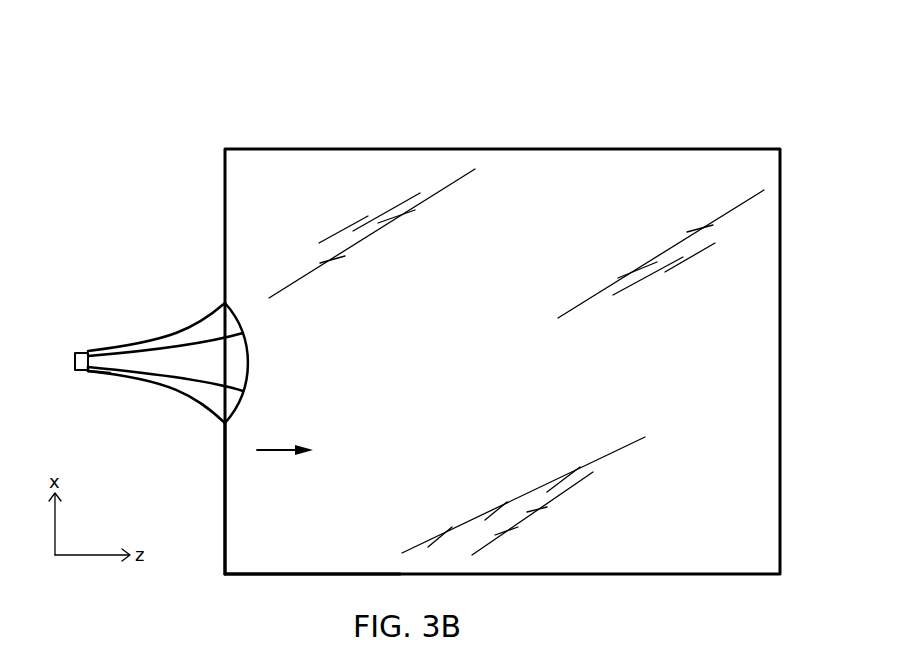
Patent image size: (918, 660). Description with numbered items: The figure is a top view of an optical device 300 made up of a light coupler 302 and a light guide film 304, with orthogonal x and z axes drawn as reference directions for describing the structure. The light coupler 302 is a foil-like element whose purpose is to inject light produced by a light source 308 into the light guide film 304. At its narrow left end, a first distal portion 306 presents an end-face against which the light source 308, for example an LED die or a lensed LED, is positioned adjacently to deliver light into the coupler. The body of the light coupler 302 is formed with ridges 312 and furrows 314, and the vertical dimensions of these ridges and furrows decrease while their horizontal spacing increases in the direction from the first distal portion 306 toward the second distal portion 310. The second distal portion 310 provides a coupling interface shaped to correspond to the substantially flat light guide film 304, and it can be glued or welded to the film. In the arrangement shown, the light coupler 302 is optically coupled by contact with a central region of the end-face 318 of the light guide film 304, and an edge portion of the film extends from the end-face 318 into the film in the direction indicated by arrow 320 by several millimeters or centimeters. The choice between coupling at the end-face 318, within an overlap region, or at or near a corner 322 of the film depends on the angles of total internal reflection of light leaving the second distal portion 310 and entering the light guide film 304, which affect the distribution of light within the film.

The optical device 300 is at (607, 102).
The light coupler 302 is at (140, 378).
The light guide film 304 is at (513, 338).
The first distal portion 306 is at (86, 373).
The light source 308 is at (82, 352).
The second distal portion 310 is at (242, 400).
The ridges 312 is at (155, 352).
The furrows 314 is at (217, 362).
The end-face 318 is at (223, 437).
The arrow 320 is at (280, 450).
The corner 322 is at (224, 575).